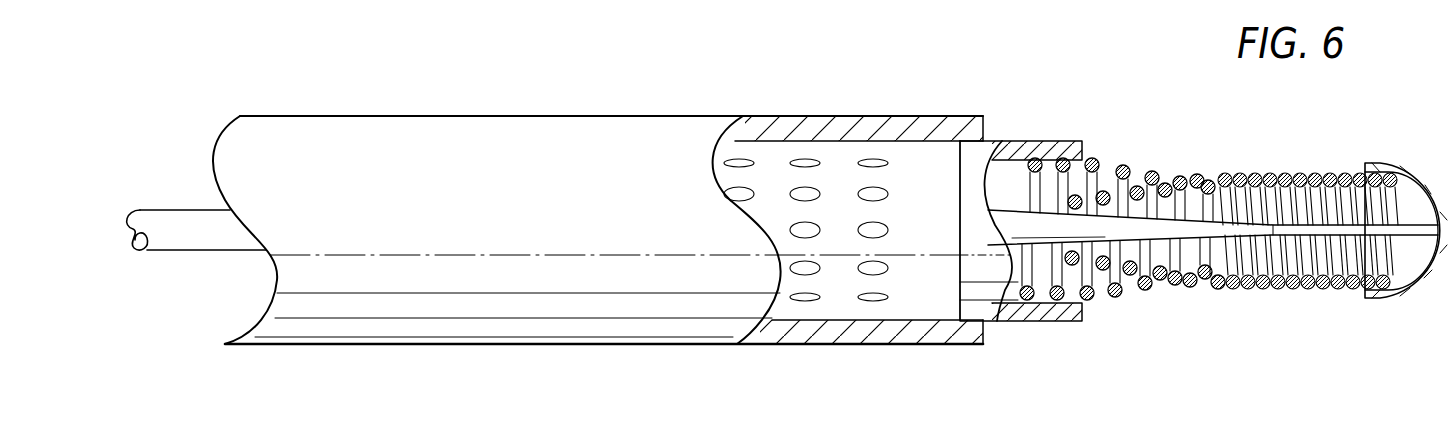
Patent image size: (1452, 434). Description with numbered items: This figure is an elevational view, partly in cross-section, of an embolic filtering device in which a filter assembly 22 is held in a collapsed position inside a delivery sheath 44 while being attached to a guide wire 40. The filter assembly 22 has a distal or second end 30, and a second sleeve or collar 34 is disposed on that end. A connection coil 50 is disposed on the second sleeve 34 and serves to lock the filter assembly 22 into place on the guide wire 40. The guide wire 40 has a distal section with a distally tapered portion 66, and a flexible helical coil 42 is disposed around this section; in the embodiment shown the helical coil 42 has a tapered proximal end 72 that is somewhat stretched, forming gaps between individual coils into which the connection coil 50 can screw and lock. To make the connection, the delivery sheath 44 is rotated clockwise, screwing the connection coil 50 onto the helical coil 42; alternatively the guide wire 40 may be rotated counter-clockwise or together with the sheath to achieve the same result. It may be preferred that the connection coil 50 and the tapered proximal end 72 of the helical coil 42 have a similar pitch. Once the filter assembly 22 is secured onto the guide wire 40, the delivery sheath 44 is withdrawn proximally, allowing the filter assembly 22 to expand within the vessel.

The filter assembly 22 is at (837, 163).
The second end 30 is at (963, 305).
The second sleeve 34 is at (1027, 322).
The guide wire 40 is at (175, 227).
The helical coil 42 is at (1192, 178).
The delivery sheath 44 is at (576, 332).
The connection coil 50 is at (1067, 162).
The tapered portion 66 is at (1057, 233).
The tapered proximal end 72 is at (1160, 277).